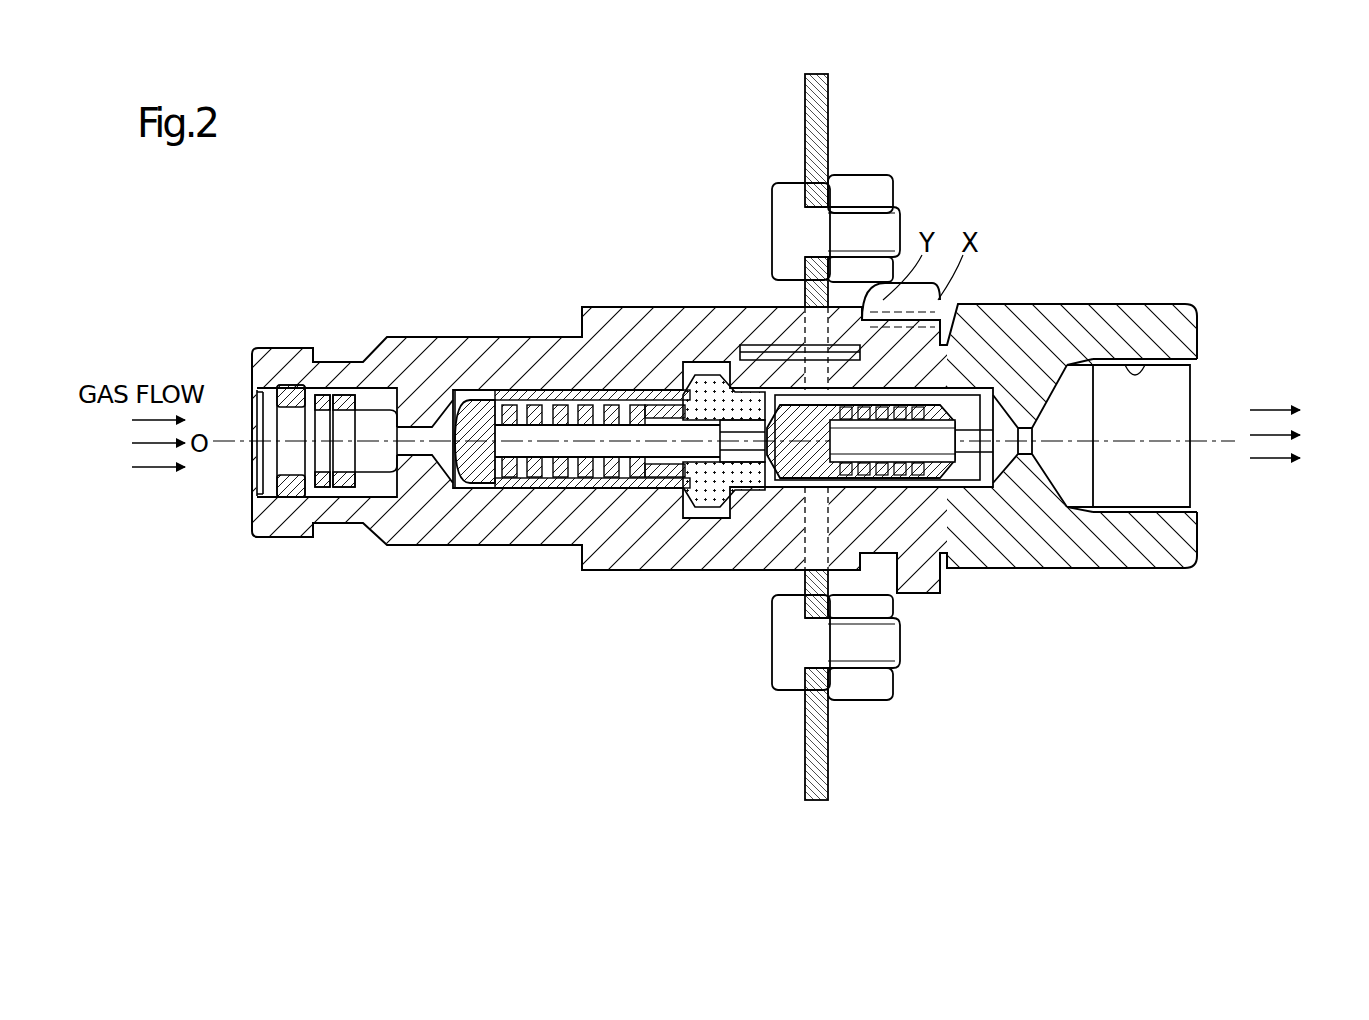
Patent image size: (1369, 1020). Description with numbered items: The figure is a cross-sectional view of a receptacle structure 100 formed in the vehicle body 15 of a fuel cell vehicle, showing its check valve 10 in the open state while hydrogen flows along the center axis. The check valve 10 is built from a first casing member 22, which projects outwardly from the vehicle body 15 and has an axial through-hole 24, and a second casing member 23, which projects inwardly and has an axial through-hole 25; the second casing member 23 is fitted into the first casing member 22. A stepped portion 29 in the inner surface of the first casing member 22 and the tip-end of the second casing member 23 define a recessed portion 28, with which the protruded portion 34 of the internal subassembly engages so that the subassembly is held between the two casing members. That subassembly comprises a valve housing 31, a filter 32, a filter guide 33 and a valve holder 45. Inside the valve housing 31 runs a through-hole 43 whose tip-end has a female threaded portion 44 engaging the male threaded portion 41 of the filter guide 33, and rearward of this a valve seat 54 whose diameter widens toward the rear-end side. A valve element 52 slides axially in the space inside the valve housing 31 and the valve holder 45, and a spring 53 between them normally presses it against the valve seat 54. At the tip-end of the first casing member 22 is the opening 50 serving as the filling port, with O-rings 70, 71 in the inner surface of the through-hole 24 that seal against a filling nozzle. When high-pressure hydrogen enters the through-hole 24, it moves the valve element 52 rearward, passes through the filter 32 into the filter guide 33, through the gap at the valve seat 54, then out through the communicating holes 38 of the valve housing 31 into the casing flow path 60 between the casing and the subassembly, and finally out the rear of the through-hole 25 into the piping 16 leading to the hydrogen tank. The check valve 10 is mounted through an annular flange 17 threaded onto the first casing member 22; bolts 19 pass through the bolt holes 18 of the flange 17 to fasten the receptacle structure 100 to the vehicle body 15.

The receptacle structure 100 is at (1108, 157).
The check valve 10 is at (545, 560).
The vehicle body 15 is at (805, 100).
The piping 16 is at (1291, 434).
The flange 17 is at (872, 692).
The bolt holes 18 is at (862, 213).
The bolts 19 is at (893, 228).
The first casing member 22 is at (425, 540).
The second casing member 23 is at (1140, 570).
The through-hole 24 is at (432, 440).
The through-hole 25 is at (1135, 372).
The recessed portion 28 is at (715, 375).
The stepped portion 29 is at (690, 398).
The valve housing 31 is at (740, 468).
The filter 32 is at (530, 393).
The filter guide 33 is at (490, 484).
The protruded portion 34 is at (736, 383).
The communicating holes 38 is at (778, 585).
The male threaded portion 41 is at (688, 498).
The through-hole 43 is at (722, 492).
The female threaded portion 44 is at (665, 392).
The valve holder 45 is at (1035, 470).
The opening 50 is at (252, 400).
The valve element 52 is at (985, 492).
The spring 53 is at (928, 585).
The valve seat 54 is at (772, 400).
The casing flow path 60 is at (985, 385).
The O-ring 70 is at (290, 390).
The O-ring 71 is at (333, 398).